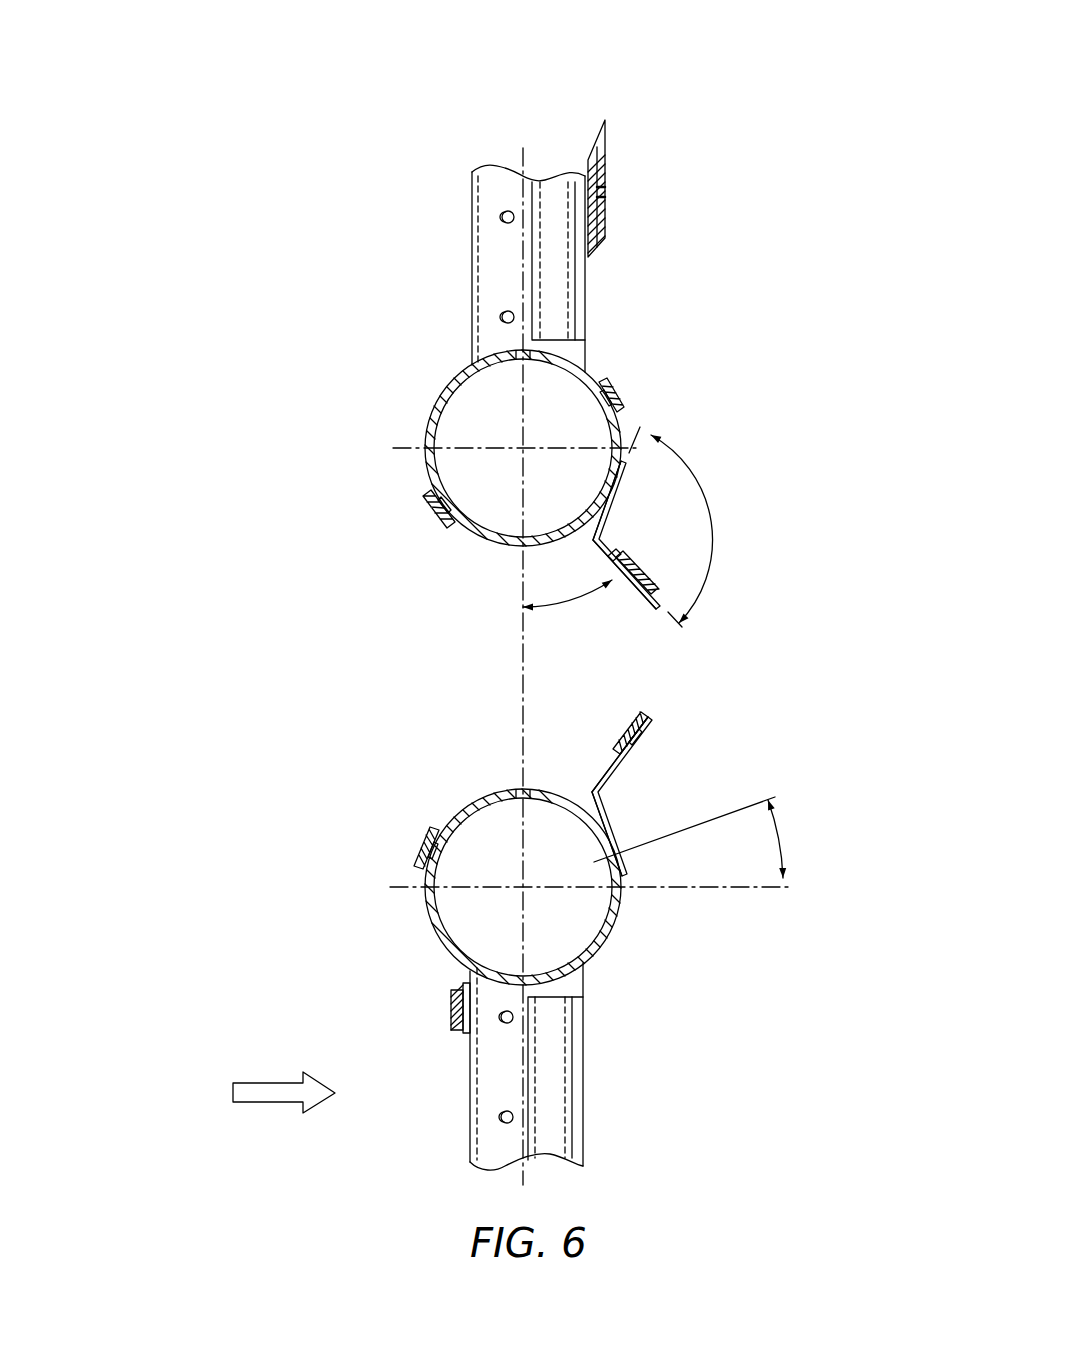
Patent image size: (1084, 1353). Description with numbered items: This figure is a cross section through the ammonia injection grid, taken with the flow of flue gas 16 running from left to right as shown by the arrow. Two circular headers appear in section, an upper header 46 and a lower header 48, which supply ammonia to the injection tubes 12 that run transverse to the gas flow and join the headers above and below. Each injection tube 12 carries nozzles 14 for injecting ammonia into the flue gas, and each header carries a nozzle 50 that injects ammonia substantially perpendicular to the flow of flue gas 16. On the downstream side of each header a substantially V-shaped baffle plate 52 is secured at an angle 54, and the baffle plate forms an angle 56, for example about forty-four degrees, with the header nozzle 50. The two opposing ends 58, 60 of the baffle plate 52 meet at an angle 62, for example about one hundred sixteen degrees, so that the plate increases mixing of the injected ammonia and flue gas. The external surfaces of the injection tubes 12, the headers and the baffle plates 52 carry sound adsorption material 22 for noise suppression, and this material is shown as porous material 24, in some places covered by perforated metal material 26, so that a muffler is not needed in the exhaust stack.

The injection tube 12 is at (487, 197).
The nozzle 14 is at (503, 220).
The flow of flue gas 16 is at (262, 1090).
The sound adsorption material 22 is at (672, 78).
The porous material 24 is at (593, 157).
The perforated metal material 26 is at (607, 152).
The upper header 46 is at (432, 410).
The lower header 48 is at (437, 935).
The nozzle 50 is at (518, 548).
The V-shaped baffle plate 52 is at (613, 578).
The angle 54 is at (706, 837).
The angle 56 is at (567, 591).
The opposing end 58 is at (626, 466).
The opposing end 60 is at (659, 604).
The angle 62 is at (689, 527).